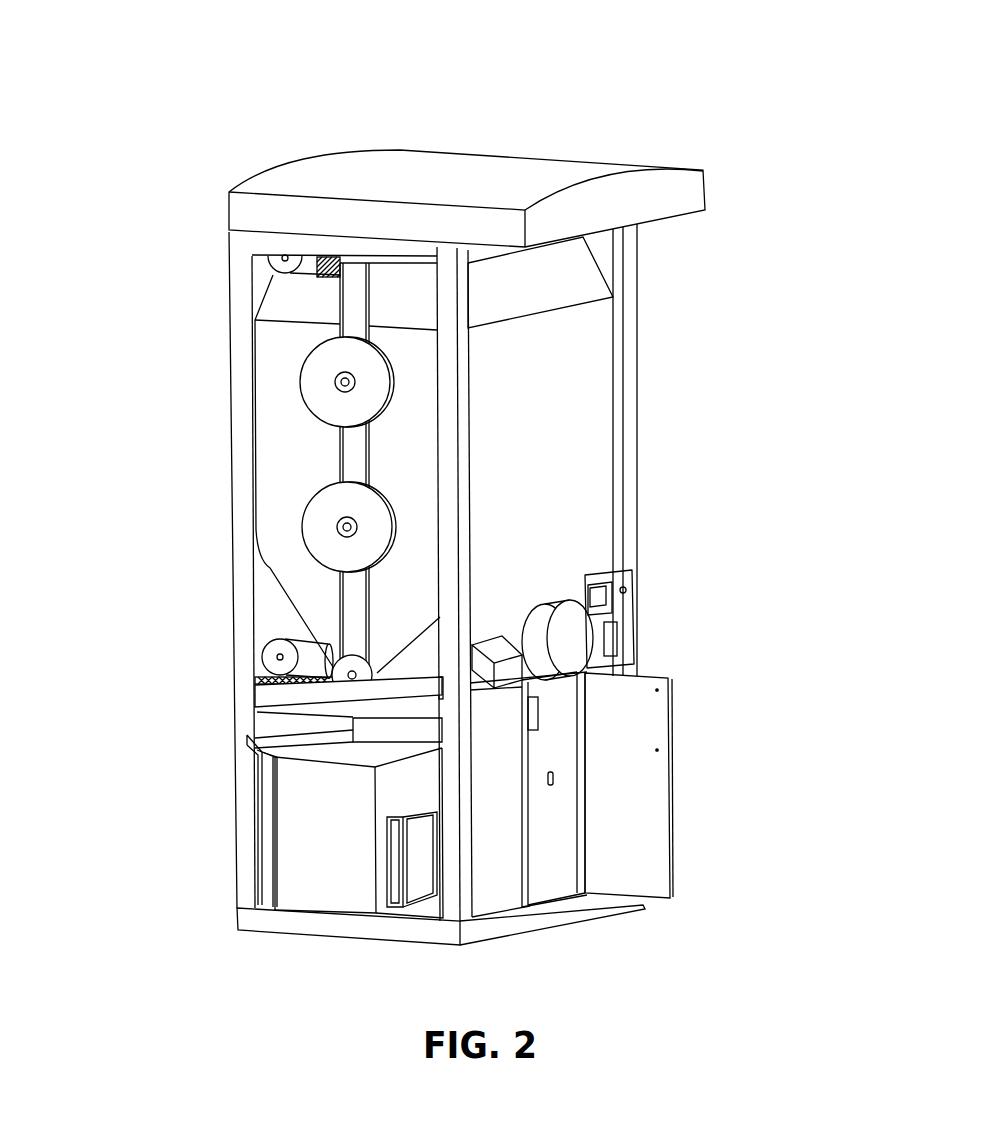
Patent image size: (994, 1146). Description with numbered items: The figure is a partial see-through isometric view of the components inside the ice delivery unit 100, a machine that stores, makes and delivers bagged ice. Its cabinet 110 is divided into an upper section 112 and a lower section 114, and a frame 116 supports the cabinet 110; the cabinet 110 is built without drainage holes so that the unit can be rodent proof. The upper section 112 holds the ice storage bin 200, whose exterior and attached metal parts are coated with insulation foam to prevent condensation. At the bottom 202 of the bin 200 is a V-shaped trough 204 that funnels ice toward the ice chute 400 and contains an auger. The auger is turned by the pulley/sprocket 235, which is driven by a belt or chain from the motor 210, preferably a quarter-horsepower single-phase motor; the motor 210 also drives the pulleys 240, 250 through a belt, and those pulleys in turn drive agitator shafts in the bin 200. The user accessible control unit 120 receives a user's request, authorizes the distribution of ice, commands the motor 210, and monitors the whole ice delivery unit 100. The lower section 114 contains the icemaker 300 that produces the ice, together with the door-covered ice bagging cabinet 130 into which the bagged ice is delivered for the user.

The ice delivery unit 100 is at (230, 93).
The cabinet 110 is at (482, 170).
The upper section 112 is at (187, 430).
The lower section 114 is at (190, 829).
The frame 116 is at (247, 265).
The control unit 120 is at (626, 604).
The ice bagging cabinet 130 is at (566, 759).
The ice storage bin 200 is at (560, 386).
The bottom of the bin 202 is at (541, 580).
The V-shaped trough 204 is at (398, 655).
The motor 210 is at (312, 266).
The pulley/sprocket 235 is at (348, 676).
The pulley 240 is at (335, 527).
The pulley 250 is at (332, 383).
The icemaker 300 is at (369, 840).
The ice chute 400 is at (671, 679).